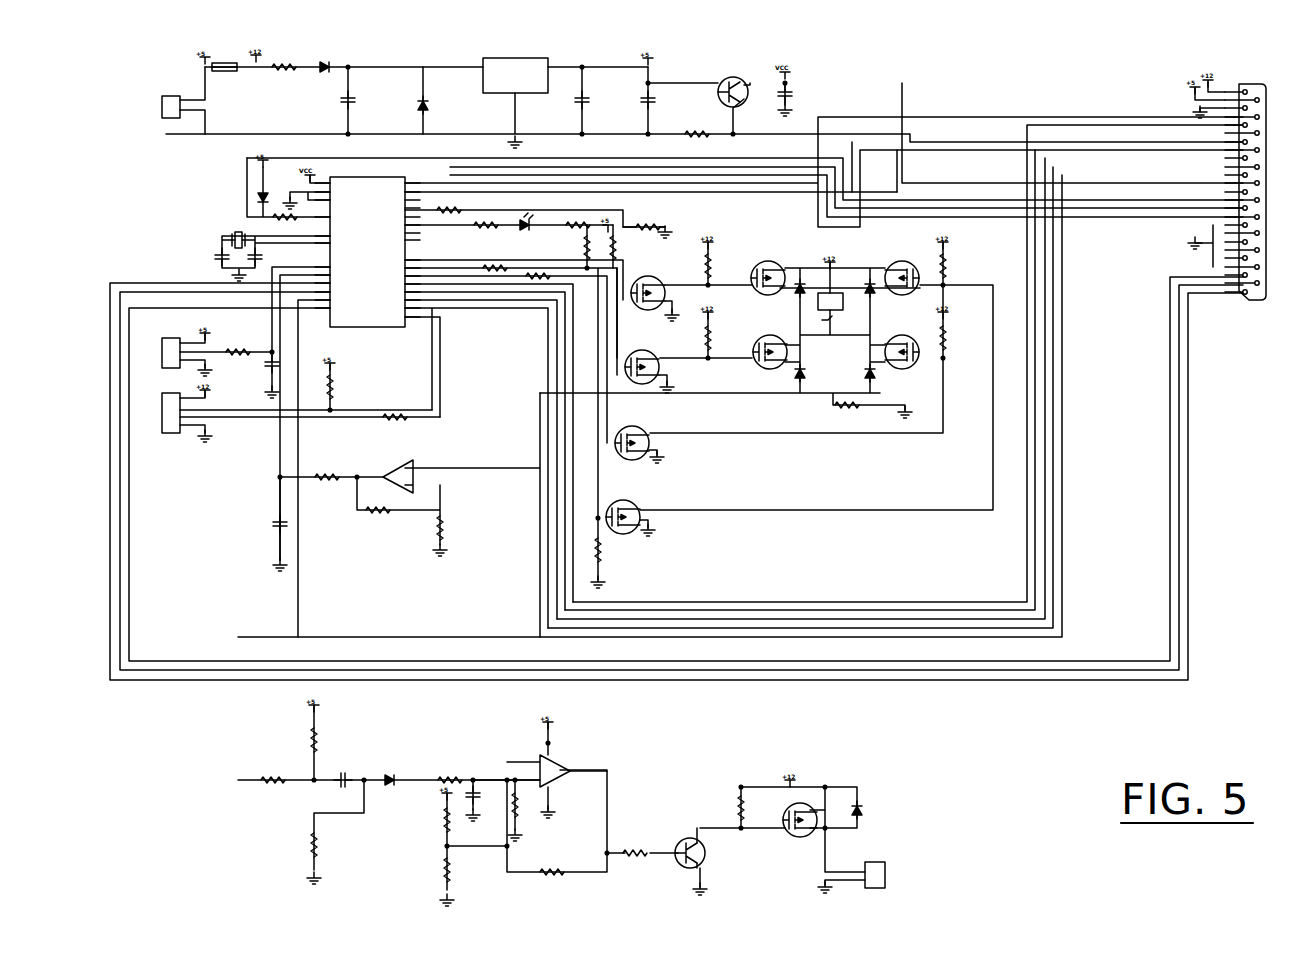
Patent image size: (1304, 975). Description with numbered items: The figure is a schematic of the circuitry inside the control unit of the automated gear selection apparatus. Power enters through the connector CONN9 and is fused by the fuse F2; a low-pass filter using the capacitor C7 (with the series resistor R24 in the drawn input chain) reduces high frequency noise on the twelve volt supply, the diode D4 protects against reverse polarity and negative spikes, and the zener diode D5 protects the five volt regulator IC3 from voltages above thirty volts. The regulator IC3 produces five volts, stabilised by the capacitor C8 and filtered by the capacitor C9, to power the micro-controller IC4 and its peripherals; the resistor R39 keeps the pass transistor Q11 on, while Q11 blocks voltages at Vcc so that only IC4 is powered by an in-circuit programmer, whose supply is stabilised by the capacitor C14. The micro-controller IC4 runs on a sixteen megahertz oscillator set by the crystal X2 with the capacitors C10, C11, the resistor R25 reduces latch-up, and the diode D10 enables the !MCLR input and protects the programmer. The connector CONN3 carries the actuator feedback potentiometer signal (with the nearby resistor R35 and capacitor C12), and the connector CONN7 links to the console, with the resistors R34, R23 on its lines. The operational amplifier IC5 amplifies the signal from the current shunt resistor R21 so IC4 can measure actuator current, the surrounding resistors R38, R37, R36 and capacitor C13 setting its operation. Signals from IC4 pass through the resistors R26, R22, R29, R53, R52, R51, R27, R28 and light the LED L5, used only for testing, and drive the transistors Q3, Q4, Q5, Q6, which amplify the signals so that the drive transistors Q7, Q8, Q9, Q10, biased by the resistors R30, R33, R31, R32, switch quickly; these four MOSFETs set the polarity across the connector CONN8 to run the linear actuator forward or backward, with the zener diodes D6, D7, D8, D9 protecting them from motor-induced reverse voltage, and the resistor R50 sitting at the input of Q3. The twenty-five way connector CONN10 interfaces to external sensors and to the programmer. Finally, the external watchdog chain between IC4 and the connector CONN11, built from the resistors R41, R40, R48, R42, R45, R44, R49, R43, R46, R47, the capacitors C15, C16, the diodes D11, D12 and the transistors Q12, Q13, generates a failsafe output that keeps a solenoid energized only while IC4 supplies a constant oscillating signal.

The power connector CONN9 is at (160, 100).
The fuse F2 is at (224, 54).
The resistor 10R 1W R24 is at (288, 54).
The diode D4 is at (338, 55).
The capacitor C7 is at (365, 100).
The zener diode D5 is at (435, 100).
The regulator IC3 is at (515, 70).
The capacitor C8 is at (595, 100).
The capacitor C9 is at (664, 101).
The pass transistor Q11 is at (698, 94).
The capacitor C14 is at (801, 92).
The resistor R39 is at (697, 147).
The micro-controller IC4 is at (368, 239).
The diode D10 is at (232, 194).
The resistor R25 is at (296, 217).
The crystal X2 is at (245, 230).
The capacitor C10 is at (207, 261).
The capacitor C11 is at (271, 261).
The position sensor connector CONN3 is at (163, 342).
The resistor 1K R35 is at (235, 338).
The capacitor 0.1uF C12 is at (251, 365).
The console connector CONN7 is at (170, 425).
The resistor 10K R34 is at (345, 393).
The resistor 100R R23 is at (394, 404).
The operational amplifier IC5 is at (492, 612).
The resistor 1K R38 is at (318, 463).
The resistor 390K R37 is at (376, 496).
The resistor 10K R36 is at (454, 528).
The capacitor 0.1uF C13 is at (297, 526).
The resistor 200R R26 is at (452, 195).
The resistor 270R R22 is at (484, 216).
The LED L5 is at (528, 207).
The resistor 200R R29 is at (577, 206).
The resistor 10K R53 is at (644, 212).
The resistor 10K R52 is at (598, 246).
The resistor 10K R51 is at (612, 247).
The resistor 200R R27 is at (496, 254).
The resistor 200R R28 is at (540, 262).
The transistor Q6 is at (650, 277).
The resistor 1K R30 is at (721, 268).
The drive transistor Q8 is at (777, 265).
The drive transistor Q7 is at (893, 265).
The resistor 1K R33 is at (957, 268).
The zener diode D6 is at (810, 284).
The zener diode D7 is at (860, 284).
The linear actuator connector CONN8 is at (828, 326).
The drive transistor Q10 is at (755, 340).
The drive transistor Q9 is at (913, 340).
The resistor 1K R31 is at (695, 343).
The resistor 1K R32 is at (958, 343).
The transistor Q5 is at (642, 358).
The zener diode D8 is at (810, 377).
The zener diode D9 is at (860, 377).
The current shunt resistor R21 is at (850, 407).
The transistor Q4 is at (635, 432).
The transistor Q3 is at (626, 506).
The resistor 10K R50 is at (612, 539).
The 25-way DB connector CONN10 is at (1256, 181).
The resistor 200R R41 is at (271, 764).
The resistor 1K R40 is at (328, 753).
The capacitor 0.1uF C15 is at (346, 766).
The resistor 100K R48 is at (331, 845).
The diode 1N4148 D11 is at (400, 765).
The resistor 10K R42 is at (456, 764).
The capacitor 0.1uF C16 is at (480, 809).
The resistor 10K R45 is at (431, 828).
The resistor 1K R44 is at (462, 868).
The resistor 1M R49 is at (522, 813).
The resistor 10M R43 is at (551, 857).
The resistor 10K R46 is at (626, 840).
The transistor BC549 Q12 is at (709, 848).
The resistor 1K R47 is at (755, 807).
The MOSFET RFD15P05 Q13 is at (788, 829).
The zener diode 30V D12 is at (855, 807).
The failsafe output connector CONN11 is at (918, 869).